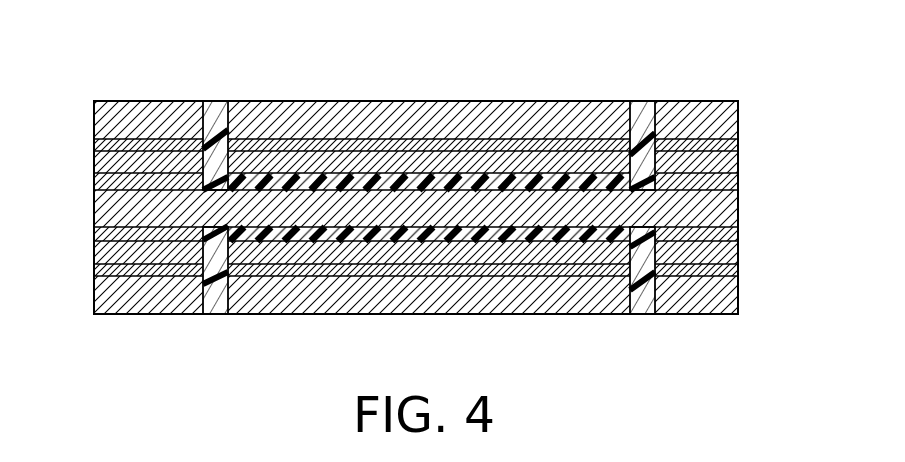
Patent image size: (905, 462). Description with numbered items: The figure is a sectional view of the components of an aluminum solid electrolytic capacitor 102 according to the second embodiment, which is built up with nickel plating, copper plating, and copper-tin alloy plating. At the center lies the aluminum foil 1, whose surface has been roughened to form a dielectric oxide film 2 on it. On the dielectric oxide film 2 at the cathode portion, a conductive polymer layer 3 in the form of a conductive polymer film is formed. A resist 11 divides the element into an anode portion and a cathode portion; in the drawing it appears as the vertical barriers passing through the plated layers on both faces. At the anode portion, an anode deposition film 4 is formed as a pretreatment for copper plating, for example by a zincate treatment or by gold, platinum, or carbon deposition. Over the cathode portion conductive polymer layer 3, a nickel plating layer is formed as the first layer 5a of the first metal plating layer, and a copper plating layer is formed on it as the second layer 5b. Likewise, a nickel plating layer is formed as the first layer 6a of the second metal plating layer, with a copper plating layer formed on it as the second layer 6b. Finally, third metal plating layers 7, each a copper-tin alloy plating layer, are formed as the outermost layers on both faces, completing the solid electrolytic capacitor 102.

The solid electrolytic capacitor 102 is at (423, 78).
The aluminum foil 1 is at (94, 207).
The dielectric oxide film 2 is at (316, 238).
The conductive polymer layer 3 is at (424, 261).
The anode deposition film 4 is at (738, 233).
The first layer of first metal plating layer (I) 5a is at (300, 138).
The second layer of first metal plating layer (I) 5b is at (344, 138).
The first layer of second metal plating layer (II) 6a is at (134, 137).
The second layer of second metal plating layer (II) 6b is at (176, 137).
The third metal plating layer (III) 7 is at (548, 108).
The resist 11 is at (218, 100).